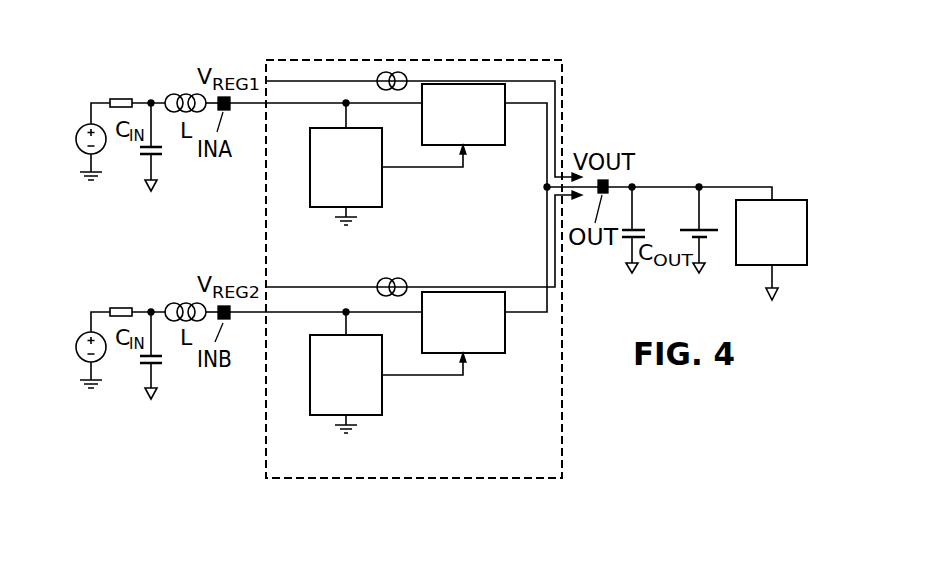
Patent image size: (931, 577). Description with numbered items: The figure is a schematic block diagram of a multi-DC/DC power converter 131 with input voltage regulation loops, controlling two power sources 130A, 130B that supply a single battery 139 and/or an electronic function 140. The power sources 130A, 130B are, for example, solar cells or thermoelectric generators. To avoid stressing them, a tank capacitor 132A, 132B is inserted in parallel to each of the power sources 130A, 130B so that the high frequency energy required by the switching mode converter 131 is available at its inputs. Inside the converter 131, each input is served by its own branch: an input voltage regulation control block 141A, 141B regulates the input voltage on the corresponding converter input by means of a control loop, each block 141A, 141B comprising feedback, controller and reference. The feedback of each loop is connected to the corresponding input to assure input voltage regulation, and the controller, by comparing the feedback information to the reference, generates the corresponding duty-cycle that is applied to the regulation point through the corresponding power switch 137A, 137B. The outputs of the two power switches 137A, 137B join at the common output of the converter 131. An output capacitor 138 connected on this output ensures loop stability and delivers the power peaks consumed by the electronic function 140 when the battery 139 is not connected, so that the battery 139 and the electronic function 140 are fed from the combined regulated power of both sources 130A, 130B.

The power source 130A is at (83, 123).
The power source 130B is at (83, 332).
The multi-DC/DC power converter 131 is at (312, 60).
The tank capacitor 132A is at (140, 160).
The tank capacitor 132B is at (140, 368).
The power switch 137A is at (487, 84).
The power switch 137B is at (490, 353).
The output capacitor 138 is at (625, 240).
The battery 139 is at (708, 233).
The electronic function 140 is at (792, 200).
The input voltage regulation control block 141A is at (383, 193).
The input voltage regulation control block 141B is at (383, 402).